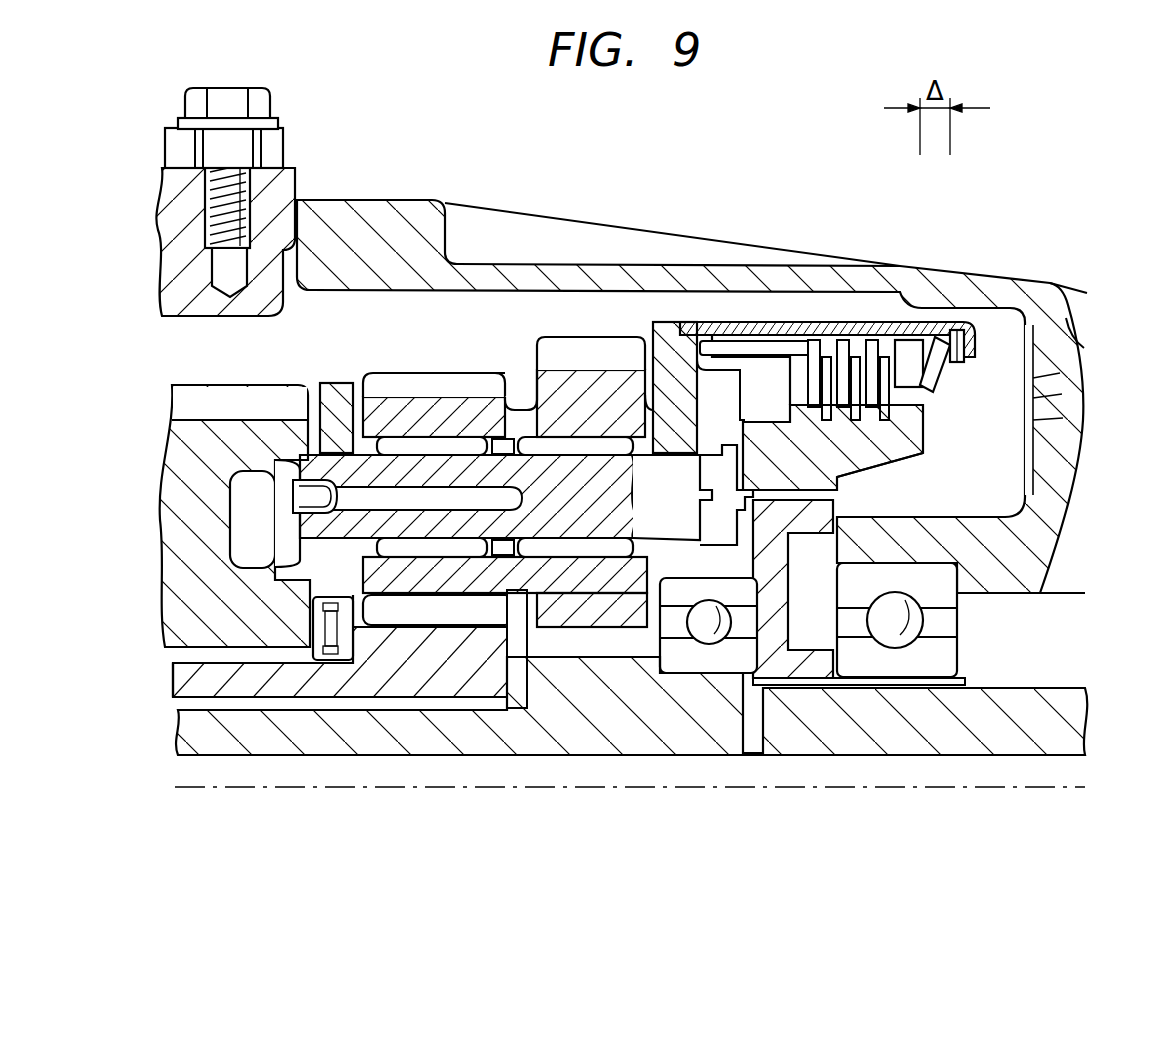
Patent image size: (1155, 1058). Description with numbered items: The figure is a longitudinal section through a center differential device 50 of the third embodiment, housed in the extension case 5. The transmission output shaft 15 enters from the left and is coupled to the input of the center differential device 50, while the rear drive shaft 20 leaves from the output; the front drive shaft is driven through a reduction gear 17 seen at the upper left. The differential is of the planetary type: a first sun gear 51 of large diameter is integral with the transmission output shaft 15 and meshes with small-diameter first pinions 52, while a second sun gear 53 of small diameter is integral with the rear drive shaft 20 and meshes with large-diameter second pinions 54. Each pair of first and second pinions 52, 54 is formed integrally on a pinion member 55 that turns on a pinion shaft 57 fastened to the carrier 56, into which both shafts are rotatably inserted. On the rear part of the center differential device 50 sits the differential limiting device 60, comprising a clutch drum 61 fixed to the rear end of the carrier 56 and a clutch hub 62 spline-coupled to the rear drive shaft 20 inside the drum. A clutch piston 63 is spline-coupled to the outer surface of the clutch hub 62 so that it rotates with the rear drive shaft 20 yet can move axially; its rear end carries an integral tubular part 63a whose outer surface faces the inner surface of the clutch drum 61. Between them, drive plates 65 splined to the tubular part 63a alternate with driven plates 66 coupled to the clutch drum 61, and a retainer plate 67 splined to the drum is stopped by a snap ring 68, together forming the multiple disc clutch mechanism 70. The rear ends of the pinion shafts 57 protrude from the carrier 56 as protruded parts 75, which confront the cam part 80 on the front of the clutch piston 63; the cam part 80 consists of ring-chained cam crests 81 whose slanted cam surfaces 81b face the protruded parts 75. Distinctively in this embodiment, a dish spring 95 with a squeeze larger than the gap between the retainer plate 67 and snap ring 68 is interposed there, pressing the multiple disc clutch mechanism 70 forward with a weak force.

The extension case 5 is at (350, 210).
The transmission output shaft 15 is at (285, 690).
The reduction gear 17 is at (230, 400).
The rear drive shaft 20 is at (713, 755).
The center differential device 50 is at (563, 322).
The first sun gear 51 is at (360, 625).
The first pinion 52 is at (465, 390).
The second sun gear 53 is at (658, 648).
The second pinion 54 is at (605, 350).
The pinion member 55 is at (522, 405).
The carrier 56 is at (336, 400).
The pinion shaft 57 is at (410, 437).
The differential limiting device 60 is at (842, 318).
The clutch drum 61 is at (890, 395).
The clutch hub 62 is at (800, 620).
The clutch piston 63 is at (776, 425).
The tubular part 63a is at (905, 444).
The drive plate 65 is at (828, 395).
The driven plate 66 is at (856, 395).
The retainer plate 67 is at (915, 405).
The snap ring 68 is at (960, 338).
The multiple disc clutch mechanism 70 is at (955, 430).
The protruded part 75 is at (700, 470).
The cam part 80 is at (745, 440).
The cam crest 81 is at (735, 436).
The slanted cam surface 81b is at (760, 345).
The dish spring 95 is at (935, 365).